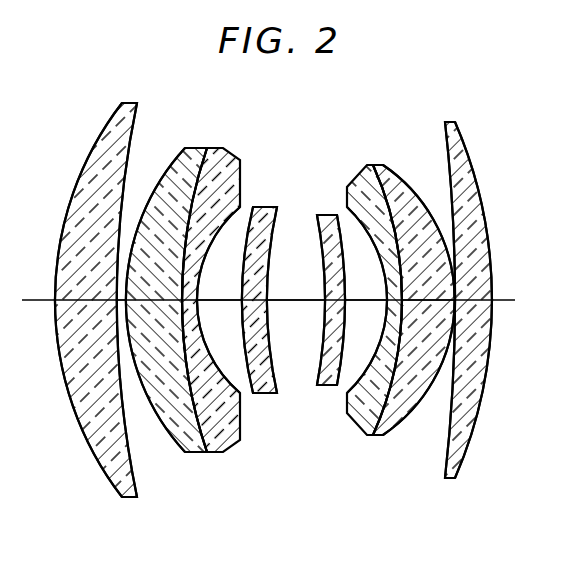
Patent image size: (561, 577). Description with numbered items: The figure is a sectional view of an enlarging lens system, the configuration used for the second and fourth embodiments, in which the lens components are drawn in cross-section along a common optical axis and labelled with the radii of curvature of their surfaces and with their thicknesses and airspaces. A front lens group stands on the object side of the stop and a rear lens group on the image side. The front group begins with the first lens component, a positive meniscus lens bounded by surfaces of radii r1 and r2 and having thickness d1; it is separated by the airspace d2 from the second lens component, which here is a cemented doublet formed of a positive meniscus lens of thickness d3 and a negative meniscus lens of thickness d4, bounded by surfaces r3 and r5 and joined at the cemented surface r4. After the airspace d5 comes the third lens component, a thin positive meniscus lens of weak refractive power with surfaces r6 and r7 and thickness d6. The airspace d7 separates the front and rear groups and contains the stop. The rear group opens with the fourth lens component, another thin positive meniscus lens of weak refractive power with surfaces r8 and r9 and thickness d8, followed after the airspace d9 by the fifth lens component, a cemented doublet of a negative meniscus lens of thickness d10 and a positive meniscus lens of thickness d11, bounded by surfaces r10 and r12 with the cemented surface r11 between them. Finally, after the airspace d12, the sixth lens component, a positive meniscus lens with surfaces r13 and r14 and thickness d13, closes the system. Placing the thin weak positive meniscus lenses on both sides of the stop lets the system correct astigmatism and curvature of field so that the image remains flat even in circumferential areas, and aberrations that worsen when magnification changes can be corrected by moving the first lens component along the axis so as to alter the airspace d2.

The radius of curvature of lens surface r1 is at (112, 481).
The radius of curvature of lens surface r2 is at (140, 487).
The radius of curvature of lens surface r3 is at (182, 447).
The radius of curvature of lens surface r4 is at (212, 443).
The radius of curvature of lens surface r5 is at (240, 440).
The radius of curvature of lens surface r6 is at (252, 394).
The radius of curvature of lens surface r7 is at (278, 394).
The radius of curvature of lens surface r8 is at (317, 383).
The radius of curvature of lens surface r9 is at (336, 387).
The radius of curvature of lens surface r10 is at (347, 407).
The radius of curvature of lens surface r11 is at (377, 435).
The radius of curvature of lens surface r12 is at (396, 425).
The radius of curvature of lens surface r13 is at (440, 467).
The radius of curvature of lens surface r14 is at (462, 468).
The lens thickness d1 is at (77, 300).
The airspace d2 is at (115, 298).
The lens thickness d3 is at (152, 300).
The lens thickness d4 is at (187, 298).
The airspace d5 is at (220, 300).
The lens thickness d6 is at (252, 298).
The airspace d7 is at (286, 300).
The lens thickness d8 is at (334, 298).
The airspace d9 is at (362, 300).
The lens thickness d10 is at (392, 298).
The lens thickness d11 is at (422, 300).
The airspace d12 is at (445, 298).
The lens thickness d13 is at (482, 298).